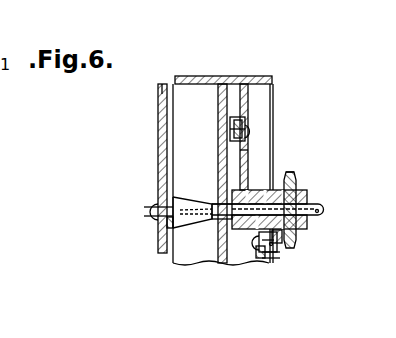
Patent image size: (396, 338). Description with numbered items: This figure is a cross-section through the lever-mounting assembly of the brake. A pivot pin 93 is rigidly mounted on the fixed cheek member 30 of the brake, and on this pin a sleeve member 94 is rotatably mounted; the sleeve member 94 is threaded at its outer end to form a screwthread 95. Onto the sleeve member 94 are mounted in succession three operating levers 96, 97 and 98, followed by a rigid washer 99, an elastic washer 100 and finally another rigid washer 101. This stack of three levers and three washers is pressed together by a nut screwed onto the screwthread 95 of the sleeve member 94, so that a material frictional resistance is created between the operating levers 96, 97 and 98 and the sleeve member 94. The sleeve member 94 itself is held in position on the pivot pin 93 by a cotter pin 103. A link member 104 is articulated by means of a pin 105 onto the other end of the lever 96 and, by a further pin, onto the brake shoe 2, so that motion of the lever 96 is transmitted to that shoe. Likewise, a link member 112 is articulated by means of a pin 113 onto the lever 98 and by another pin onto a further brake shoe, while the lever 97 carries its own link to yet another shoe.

The brake shoe 2 is at (272, 78).
The fixed cheek member 30 is at (161, 149).
The pivot pin 93 is at (218, 222).
The sleeve member 94 is at (245, 200).
The screwthread 95 is at (307, 222).
The operating lever 96 is at (246, 148).
The operating lever 97 is at (273, 158).
The operating lever 98 is at (295, 172).
The rigid washer 99 is at (297, 180).
The elastic washer 100 is at (283, 236).
The rigid washer 101 is at (308, 193).
The cotter pin 103 is at (323, 210).
The link member 104 is at (240, 118).
The pin 105 is at (243, 132).
The link member 112 is at (272, 253).
The pin 113 is at (280, 248).